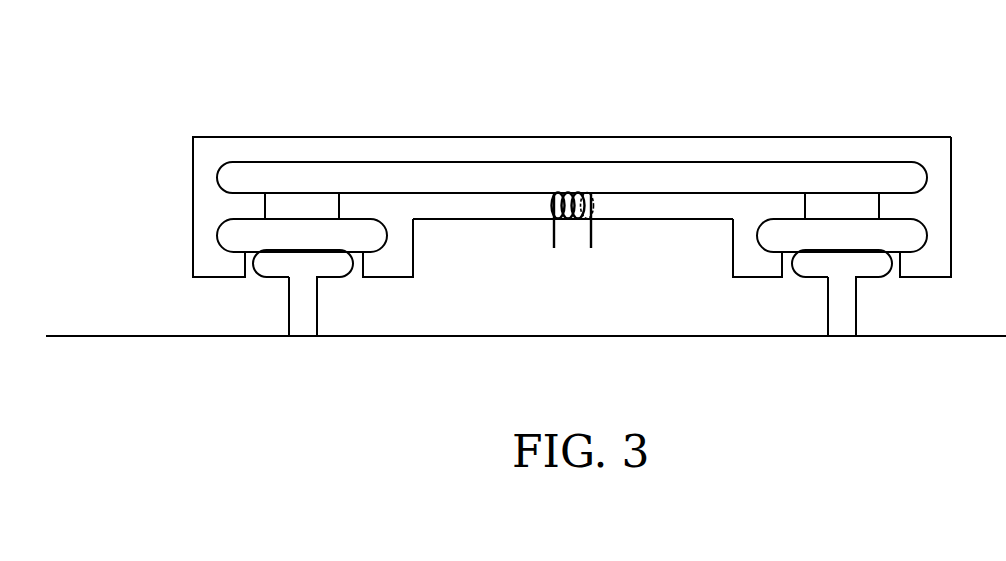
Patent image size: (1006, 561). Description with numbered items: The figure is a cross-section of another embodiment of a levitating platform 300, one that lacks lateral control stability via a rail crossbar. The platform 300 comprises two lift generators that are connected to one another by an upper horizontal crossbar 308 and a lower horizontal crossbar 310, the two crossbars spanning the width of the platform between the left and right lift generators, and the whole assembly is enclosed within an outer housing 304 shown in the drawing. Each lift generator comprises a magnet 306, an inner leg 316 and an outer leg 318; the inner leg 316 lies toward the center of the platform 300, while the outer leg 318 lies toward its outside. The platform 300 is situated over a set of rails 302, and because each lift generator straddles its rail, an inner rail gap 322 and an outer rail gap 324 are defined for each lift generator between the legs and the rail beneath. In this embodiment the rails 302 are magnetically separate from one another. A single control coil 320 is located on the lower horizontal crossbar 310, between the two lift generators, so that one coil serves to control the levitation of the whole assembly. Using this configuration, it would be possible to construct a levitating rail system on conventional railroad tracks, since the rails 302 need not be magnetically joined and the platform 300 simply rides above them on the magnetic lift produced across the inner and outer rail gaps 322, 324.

The platform 300 is at (120, 60).
The rails 302 is at (289, 316).
The housing 304 is at (192, 149).
The magnet 306 is at (303, 193).
The upper horizontal crossbar 308 is at (364, 137).
The lower horizontal crossbar 310 is at (515, 219).
The inner leg 316 is at (413, 267).
The outer leg 318 is at (192, 265).
The control coil 320 is at (591, 240).
The inner rail gap 322 is at (788, 272).
The outer rail gap 324 is at (892, 272).